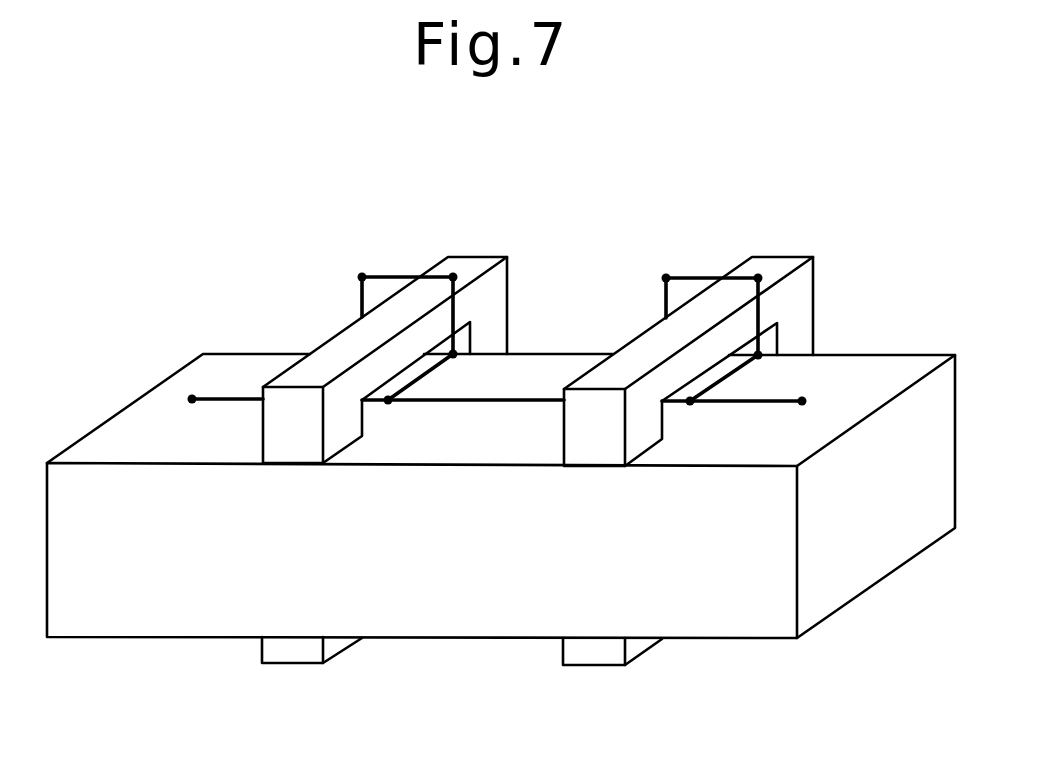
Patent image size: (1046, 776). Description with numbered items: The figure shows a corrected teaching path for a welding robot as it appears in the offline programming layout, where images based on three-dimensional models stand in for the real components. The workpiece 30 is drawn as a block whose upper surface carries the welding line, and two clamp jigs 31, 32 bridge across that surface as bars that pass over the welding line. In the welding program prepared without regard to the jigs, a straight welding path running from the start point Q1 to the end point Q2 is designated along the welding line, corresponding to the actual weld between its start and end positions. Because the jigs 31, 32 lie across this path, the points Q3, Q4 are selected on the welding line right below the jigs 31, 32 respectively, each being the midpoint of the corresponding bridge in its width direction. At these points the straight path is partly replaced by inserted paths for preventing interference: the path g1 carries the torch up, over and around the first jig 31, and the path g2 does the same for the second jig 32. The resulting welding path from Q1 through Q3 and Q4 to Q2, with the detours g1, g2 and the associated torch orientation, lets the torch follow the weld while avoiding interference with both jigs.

The workpiece image 30 is at (112, 620).
The clamp jig image 31 is at (297, 443).
The clamp jig image 32 is at (592, 442).
The path for preventing interference g1 is at (398, 277).
The path for preventing interference g2 is at (702, 277).
The start point of welding path Q1 is at (192, 399).
The end point of welding path Q2 is at (802, 401).
The point below first jig Q3 is at (388, 400).
The point below second jig Q4 is at (690, 401).